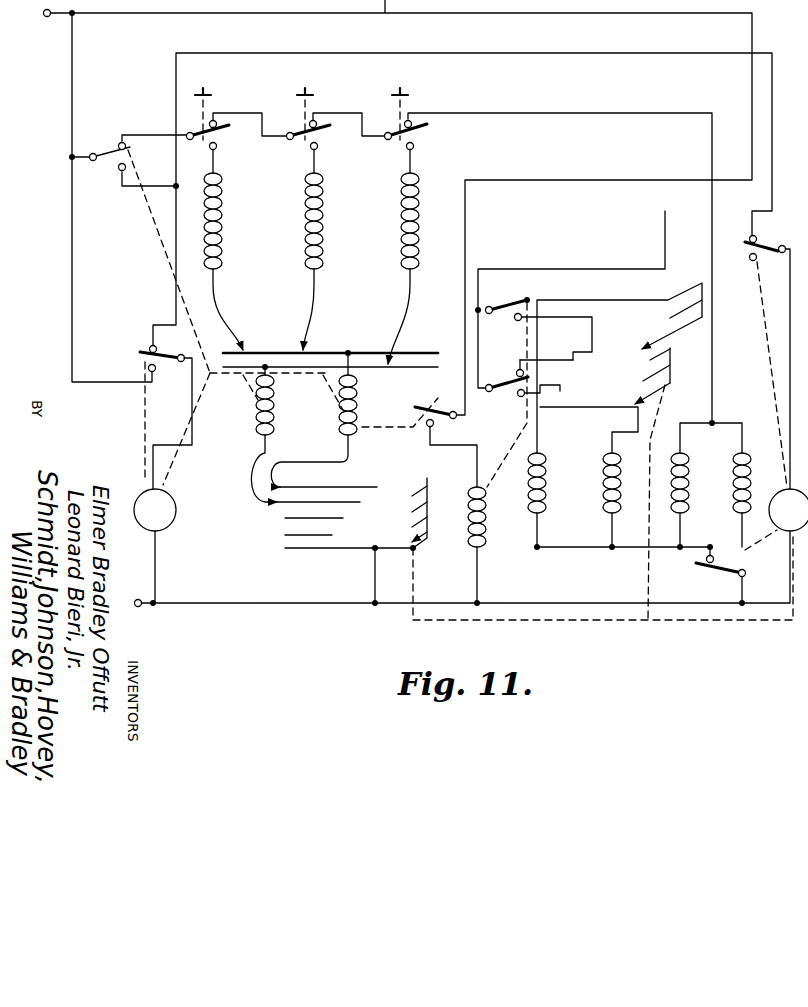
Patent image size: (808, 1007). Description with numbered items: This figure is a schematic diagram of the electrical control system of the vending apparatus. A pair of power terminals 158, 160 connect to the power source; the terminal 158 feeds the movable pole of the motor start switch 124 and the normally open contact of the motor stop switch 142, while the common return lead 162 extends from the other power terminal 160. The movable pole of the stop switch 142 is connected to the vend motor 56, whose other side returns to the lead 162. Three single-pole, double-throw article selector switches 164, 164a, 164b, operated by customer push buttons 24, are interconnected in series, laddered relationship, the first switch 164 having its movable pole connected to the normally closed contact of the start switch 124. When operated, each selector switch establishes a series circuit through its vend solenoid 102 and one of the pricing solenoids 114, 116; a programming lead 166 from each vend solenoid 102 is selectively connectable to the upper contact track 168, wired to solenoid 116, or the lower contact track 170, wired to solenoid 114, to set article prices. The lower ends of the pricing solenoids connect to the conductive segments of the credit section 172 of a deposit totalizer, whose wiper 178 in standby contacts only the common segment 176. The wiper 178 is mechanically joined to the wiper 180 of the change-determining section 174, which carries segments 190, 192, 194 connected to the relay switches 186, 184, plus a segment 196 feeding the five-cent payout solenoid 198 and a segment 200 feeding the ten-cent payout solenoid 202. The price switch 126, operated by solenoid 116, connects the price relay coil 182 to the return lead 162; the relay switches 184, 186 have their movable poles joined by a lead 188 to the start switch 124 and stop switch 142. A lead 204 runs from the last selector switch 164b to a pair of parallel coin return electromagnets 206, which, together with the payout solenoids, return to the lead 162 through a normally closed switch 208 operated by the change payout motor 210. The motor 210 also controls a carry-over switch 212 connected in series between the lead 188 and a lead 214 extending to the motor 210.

The power terminal 158 is at (47, 17).
The lead 188 is at (560, 53).
The lead 204 is at (545, 113).
The motor start switch 124 is at (106, 153).
The push buttons 24 is at (402, 80).
The article selector switch 164 is at (222, 113).
The article selector switch 164a is at (322, 113).
The article selector switch 164b is at (420, 112).
The vend solenoid 102 is at (222, 213).
The programming lead 166 is at (225, 315).
The contact track 168 is at (277, 348).
The motor stop switch 142 is at (146, 348).
The contact track 170 is at (301, 377).
The pricing solenoid 114 is at (256, 422).
The pricing solenoid 116 is at (348, 422).
The price switch 126 is at (439, 391).
The credit section 172 is at (411, 474).
The wiper 178 is at (447, 472).
The common segment 176 is at (330, 553).
The price relay coil 182 is at (492, 533).
The power terminal 160 is at (138, 608).
The common return lead 162 is at (571, 601).
The vend motor 56 is at (172, 527).
The relay switch 186 is at (528, 296).
The relay switch 184 is at (500, 377).
The conductive segment 190 is at (545, 320).
The conductive segment 192 is at (565, 362).
The conductive segment 194 is at (563, 386).
The conductive segment 196 is at (586, 298).
The change-determining section 174 is at (653, 299).
The wiper 180 is at (677, 358).
The conductive segment 200 is at (568, 412).
The five-cent payout solenoid 198 is at (550, 513).
The ten-cent payout solenoid 202 is at (604, 484).
The coin return electromagnets 206 is at (724, 499).
The motor carry-over switch 212 is at (778, 230).
The lead 214 is at (785, 405).
The normally closed switch 208 is at (708, 570).
The change payout motor 210 is at (783, 535).